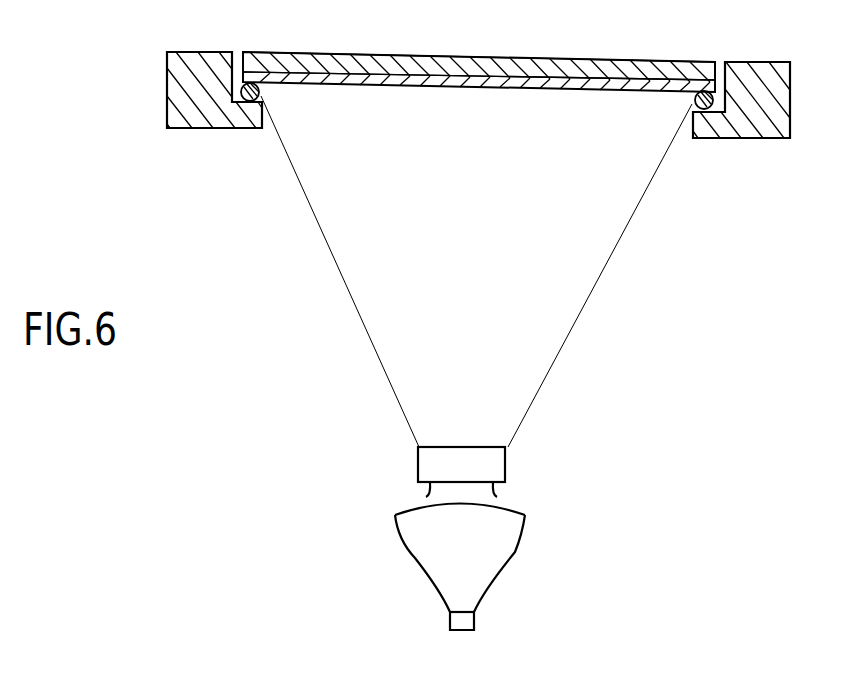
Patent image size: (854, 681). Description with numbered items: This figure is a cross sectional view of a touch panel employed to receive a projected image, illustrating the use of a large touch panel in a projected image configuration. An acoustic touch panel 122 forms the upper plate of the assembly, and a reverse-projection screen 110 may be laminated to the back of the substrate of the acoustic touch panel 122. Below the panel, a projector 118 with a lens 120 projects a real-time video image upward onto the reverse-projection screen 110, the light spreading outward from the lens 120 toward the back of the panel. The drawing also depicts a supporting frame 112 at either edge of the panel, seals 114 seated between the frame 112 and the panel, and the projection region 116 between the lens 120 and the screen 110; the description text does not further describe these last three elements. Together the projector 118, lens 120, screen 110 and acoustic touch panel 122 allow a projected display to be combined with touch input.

The reverse-projection screen 110 is at (530, 88).
The frame 112 is at (751, 139).
The O-ring seal 114 is at (692, 100).
The light beam region 116 is at (540, 165).
The projector 118 is at (526, 542).
The lens 120 is at (418, 465).
The acoustic touch panel 122 is at (473, 58).